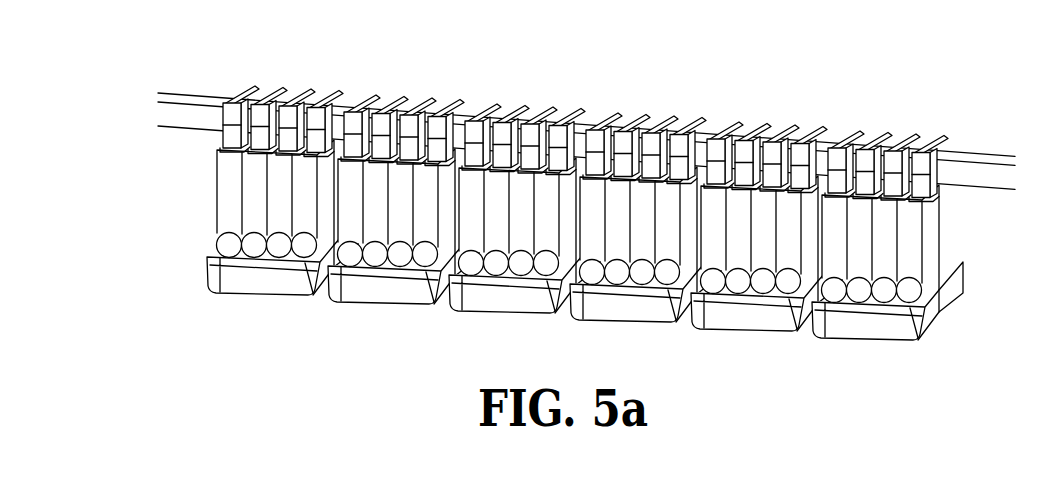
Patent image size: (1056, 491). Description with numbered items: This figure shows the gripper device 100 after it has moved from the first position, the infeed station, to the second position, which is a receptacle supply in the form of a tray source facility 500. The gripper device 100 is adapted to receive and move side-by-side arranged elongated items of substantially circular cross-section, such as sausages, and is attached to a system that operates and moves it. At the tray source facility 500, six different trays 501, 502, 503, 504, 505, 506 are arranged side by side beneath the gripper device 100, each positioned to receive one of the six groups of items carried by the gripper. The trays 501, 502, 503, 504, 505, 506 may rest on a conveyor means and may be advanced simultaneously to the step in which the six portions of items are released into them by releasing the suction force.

The gripper device 100 is at (966, 129).
The tray source facility 500 is at (614, 248).
The tray 501 is at (263, 283).
The tray 502 is at (377, 297).
The tray 503 is at (503, 313).
The tray 504 is at (617, 320).
The tray 505 is at (752, 317).
The tray 506 is at (863, 330).